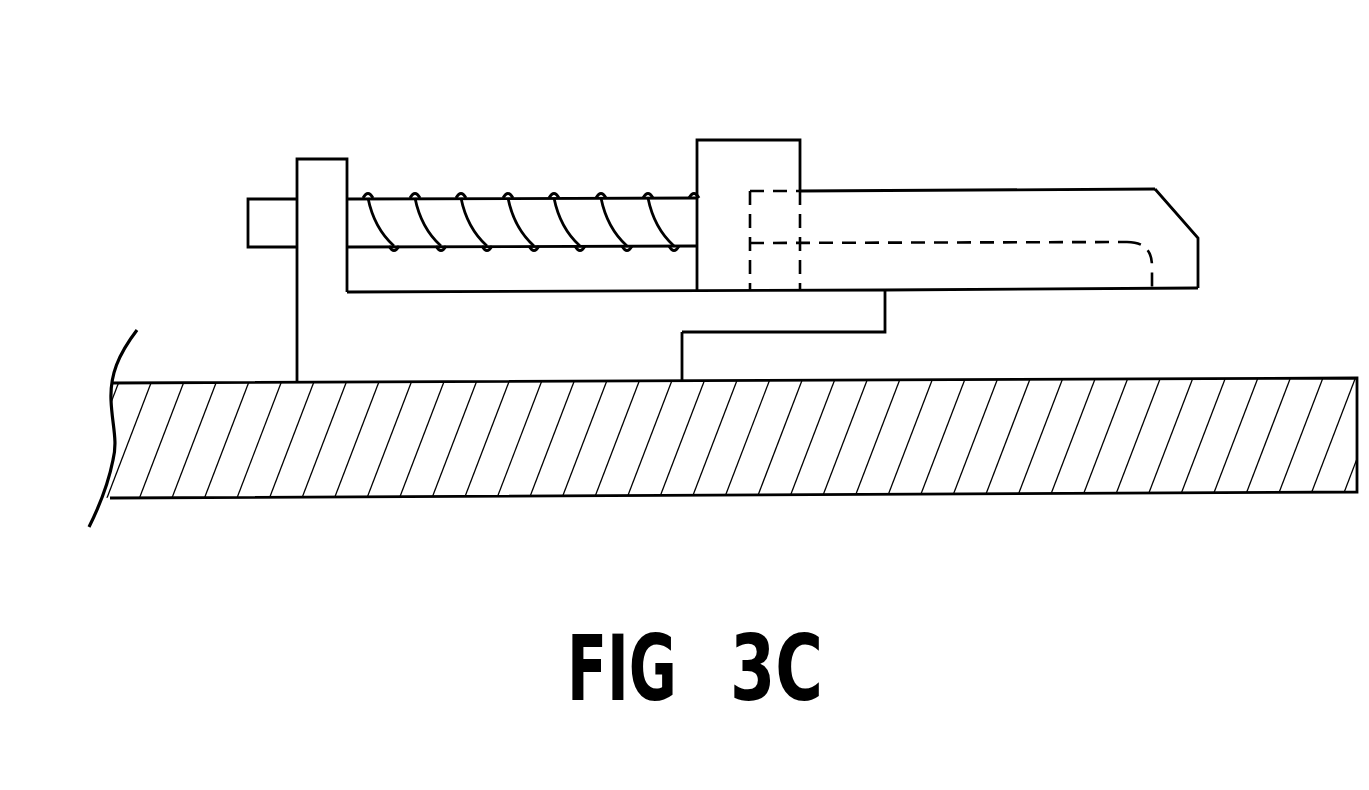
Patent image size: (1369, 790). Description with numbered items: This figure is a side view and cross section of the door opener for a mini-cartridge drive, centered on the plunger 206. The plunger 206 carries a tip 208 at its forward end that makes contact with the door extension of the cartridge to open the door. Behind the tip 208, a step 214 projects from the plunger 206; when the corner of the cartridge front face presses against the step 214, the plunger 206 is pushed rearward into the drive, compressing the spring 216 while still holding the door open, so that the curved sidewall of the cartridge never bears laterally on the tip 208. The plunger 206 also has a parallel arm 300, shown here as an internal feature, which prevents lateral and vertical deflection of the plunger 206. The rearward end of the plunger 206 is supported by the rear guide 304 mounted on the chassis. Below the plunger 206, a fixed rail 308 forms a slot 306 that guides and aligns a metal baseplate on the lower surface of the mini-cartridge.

The plunger 206 is at (922, 192).
The tip 208 is at (1198, 257).
The step 214 is at (800, 167).
The spring 216 is at (508, 197).
The parallel arm 300 is at (1057, 242).
The rear guide 304 is at (318, 158).
The slot 306 is at (903, 365).
The fixed rail 308 is at (755, 335).